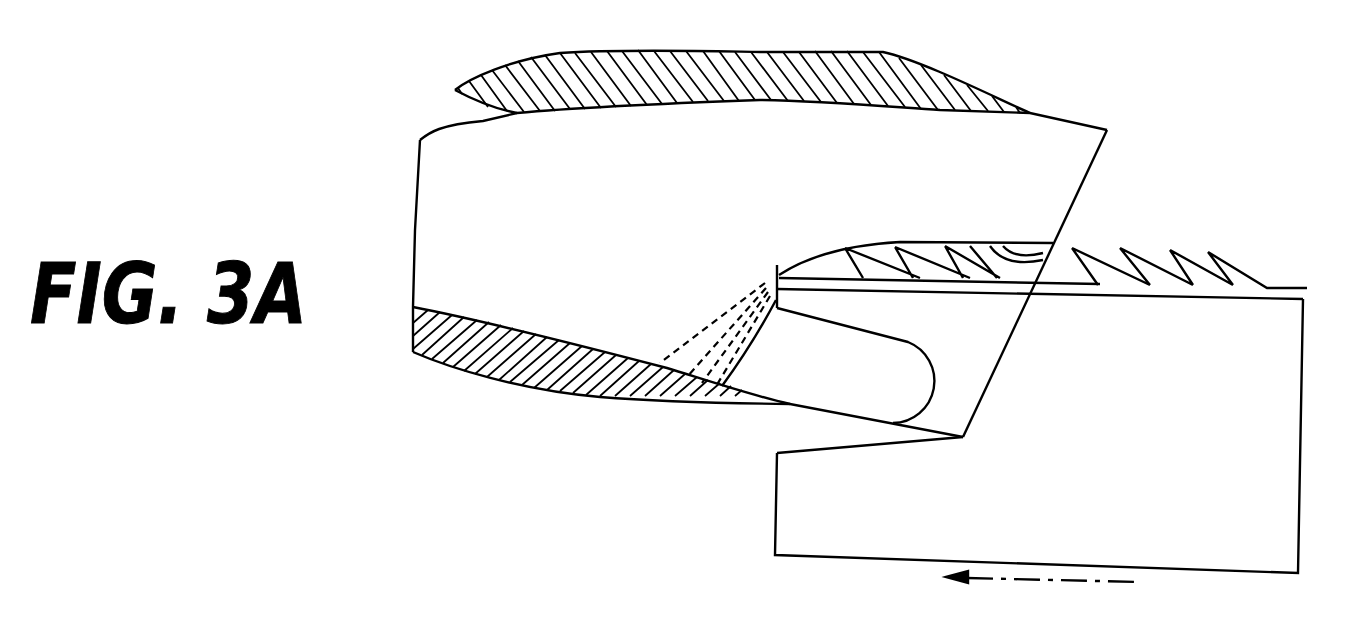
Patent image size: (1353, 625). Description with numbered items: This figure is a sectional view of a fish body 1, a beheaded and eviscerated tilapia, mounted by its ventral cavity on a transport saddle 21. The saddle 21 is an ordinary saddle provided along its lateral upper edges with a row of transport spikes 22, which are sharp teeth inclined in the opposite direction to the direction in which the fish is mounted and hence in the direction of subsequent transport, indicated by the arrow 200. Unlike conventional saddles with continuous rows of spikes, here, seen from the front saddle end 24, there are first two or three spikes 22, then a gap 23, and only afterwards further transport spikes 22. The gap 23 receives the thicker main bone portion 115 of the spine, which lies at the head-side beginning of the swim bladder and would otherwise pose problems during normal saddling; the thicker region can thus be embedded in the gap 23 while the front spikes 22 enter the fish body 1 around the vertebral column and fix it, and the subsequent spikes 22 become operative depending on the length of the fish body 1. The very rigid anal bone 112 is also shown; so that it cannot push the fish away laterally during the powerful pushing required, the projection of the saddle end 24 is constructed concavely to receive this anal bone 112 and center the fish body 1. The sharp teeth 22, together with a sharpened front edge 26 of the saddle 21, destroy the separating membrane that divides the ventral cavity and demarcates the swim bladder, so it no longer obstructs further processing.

The fish body 1 is at (445, 150).
The saddle 21 is at (1253, 511).
The transport spikes 22 is at (927, 275).
The gap 23 is at (1063, 290).
The front saddle end 24 is at (853, 312).
The sharpened front edge 26 is at (777, 265).
The anal bone 112 is at (723, 305).
The thicker main bone portion 115 is at (1043, 252).
The arrow indicating direction of transport 200 is at (1043, 587).